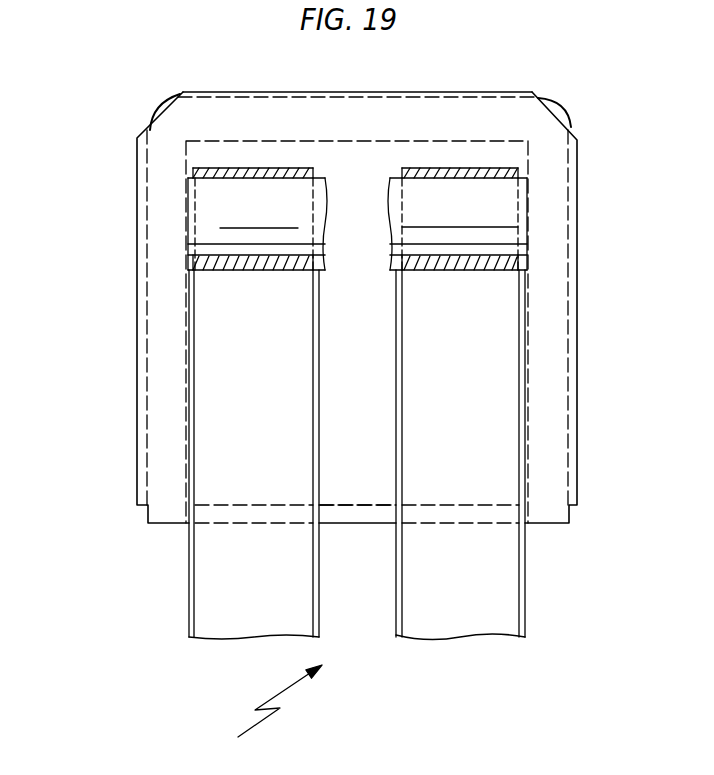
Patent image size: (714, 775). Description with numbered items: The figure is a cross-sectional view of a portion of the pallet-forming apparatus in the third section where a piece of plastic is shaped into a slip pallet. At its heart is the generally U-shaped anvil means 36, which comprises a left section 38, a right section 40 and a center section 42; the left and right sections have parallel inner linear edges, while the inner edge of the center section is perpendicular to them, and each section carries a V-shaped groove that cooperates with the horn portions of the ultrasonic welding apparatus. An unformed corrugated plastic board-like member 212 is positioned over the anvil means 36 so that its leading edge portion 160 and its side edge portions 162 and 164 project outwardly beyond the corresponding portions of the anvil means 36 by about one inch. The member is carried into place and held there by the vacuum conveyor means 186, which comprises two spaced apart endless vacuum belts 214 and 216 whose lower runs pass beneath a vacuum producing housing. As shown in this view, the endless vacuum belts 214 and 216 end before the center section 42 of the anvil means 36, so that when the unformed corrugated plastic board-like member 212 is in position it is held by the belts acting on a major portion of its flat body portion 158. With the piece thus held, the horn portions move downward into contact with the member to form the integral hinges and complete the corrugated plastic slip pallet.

The anvil means 36 is at (543, 405).
The left section 38 is at (148, 376).
The right section 40 is at (567, 342).
The center section 42 is at (283, 98).
The flat body portion 158 is at (371, 373).
The leading edge portion 160 is at (380, 97).
The side edge portion 162 is at (570, 260).
The side edge portion 164 is at (137, 237).
The vacuum conveyor means 186 is at (258, 710).
The unformed corrugated plastic board-like member 212 is at (542, 131).
The endless vacuum belt 214 is at (503, 472).
The endless vacuum belt 216 is at (208, 456).